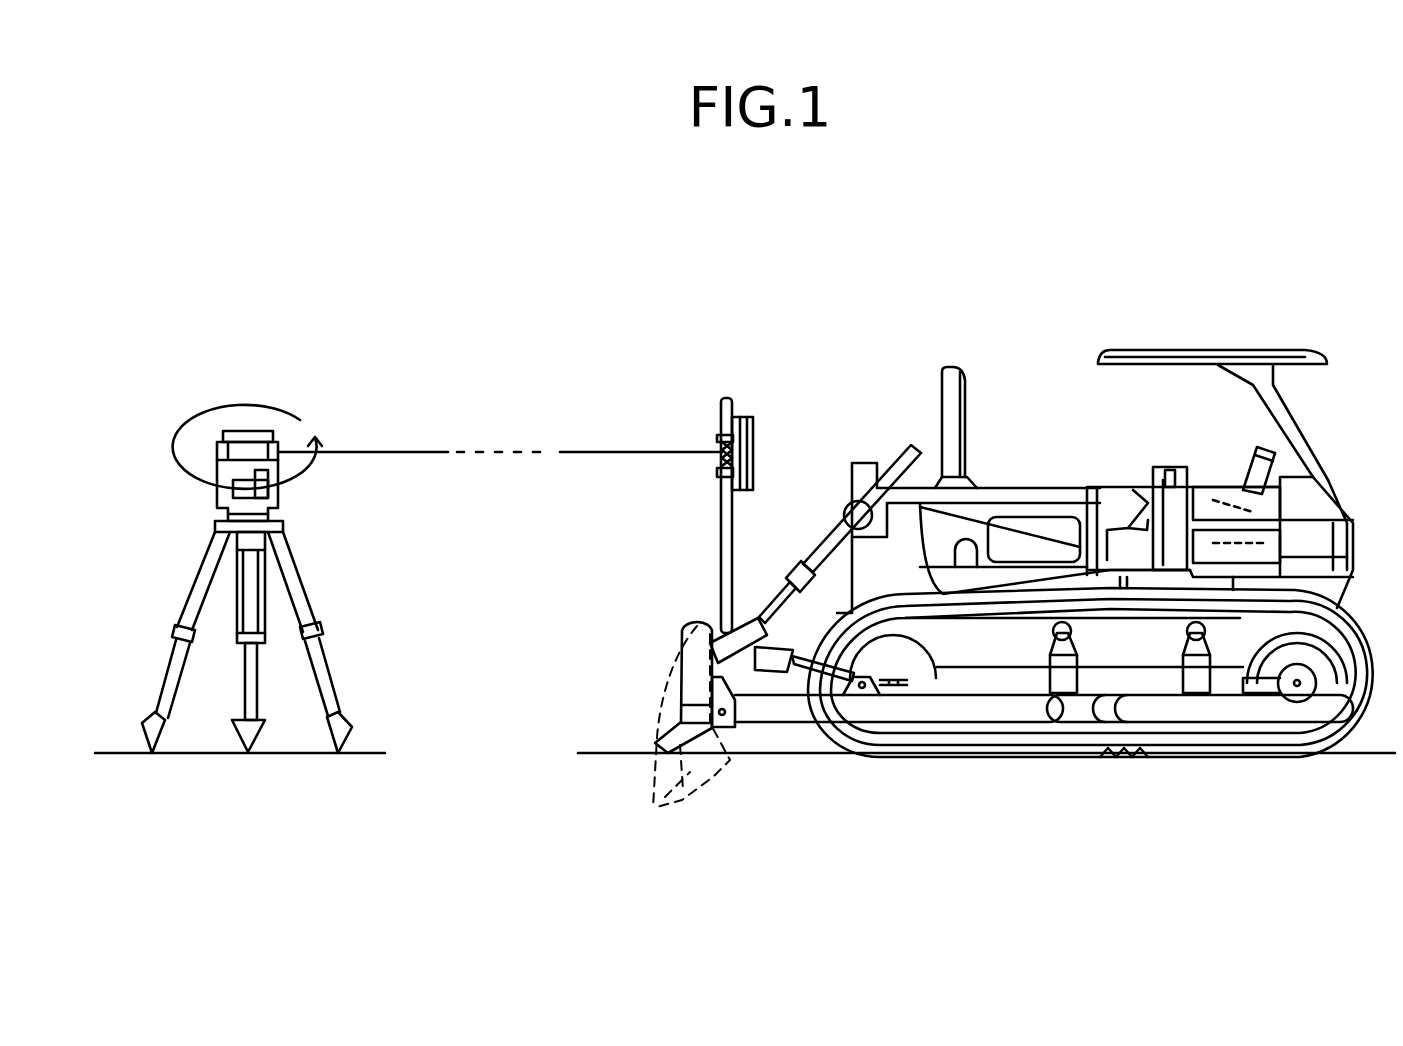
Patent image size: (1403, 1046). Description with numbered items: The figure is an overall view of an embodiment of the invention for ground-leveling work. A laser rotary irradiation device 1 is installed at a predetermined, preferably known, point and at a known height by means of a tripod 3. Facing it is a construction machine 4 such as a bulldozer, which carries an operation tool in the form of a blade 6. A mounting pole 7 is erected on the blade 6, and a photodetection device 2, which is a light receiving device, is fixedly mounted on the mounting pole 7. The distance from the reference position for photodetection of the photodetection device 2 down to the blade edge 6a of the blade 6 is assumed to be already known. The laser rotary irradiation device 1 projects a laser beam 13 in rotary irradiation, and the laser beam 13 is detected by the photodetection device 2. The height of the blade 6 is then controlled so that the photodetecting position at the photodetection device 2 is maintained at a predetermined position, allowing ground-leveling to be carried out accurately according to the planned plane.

The laser rotary irradiation device 1 is at (243, 431).
The photodetection device 2 is at (756, 427).
The tripod 3 is at (202, 560).
The construction machine 4 is at (1028, 355).
The blade 6 is at (682, 640).
The blade edge 6a is at (653, 752).
The mounting pole 7 is at (720, 523).
The laser beam 13 is at (403, 452).